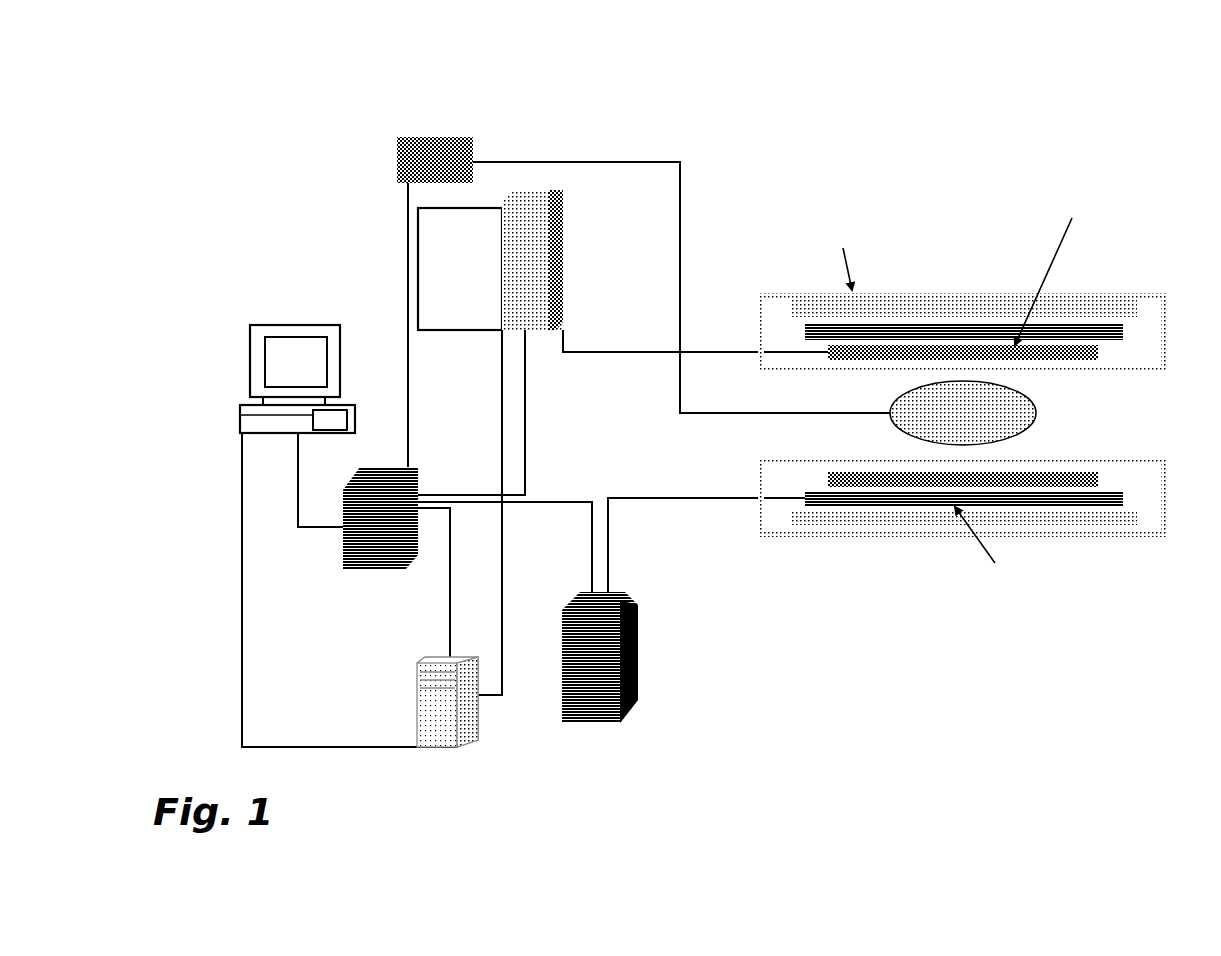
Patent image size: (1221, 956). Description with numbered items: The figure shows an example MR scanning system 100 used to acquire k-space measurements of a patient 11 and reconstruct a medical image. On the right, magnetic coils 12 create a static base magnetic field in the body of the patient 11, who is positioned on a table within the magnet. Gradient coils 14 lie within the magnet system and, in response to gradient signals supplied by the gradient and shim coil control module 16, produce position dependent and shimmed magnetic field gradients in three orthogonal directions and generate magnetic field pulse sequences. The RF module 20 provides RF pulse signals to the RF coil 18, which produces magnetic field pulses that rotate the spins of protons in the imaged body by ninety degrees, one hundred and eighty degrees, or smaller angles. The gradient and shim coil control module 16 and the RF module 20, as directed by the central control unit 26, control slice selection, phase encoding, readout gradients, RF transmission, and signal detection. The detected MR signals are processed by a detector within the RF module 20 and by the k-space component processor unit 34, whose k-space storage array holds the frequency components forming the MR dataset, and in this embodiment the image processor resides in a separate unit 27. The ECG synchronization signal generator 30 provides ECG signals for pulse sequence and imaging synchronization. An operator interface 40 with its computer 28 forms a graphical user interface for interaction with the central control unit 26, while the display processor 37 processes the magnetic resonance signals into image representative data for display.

The MR scanning system 100 is at (148, 90).
The ECG synchronization signal generator 30 is at (397, 160).
The k-space component processor unit 34 is at (418, 250).
The RF module 20 is at (548, 207).
The central control unit 26 is at (343, 538).
The operator interface 40 is at (296, 358).
The computer 28 is at (240, 412).
The display processor 37 is at (240, 415).
The separate unit 27 is at (415, 700).
The gradient and shim coil control module 16 is at (638, 618).
The magnetic coils 12 is at (1090, 312).
The gradient coils 14 is at (1123, 332).
The RF coil 18 is at (1098, 352).
The patient 11 is at (1010, 423).